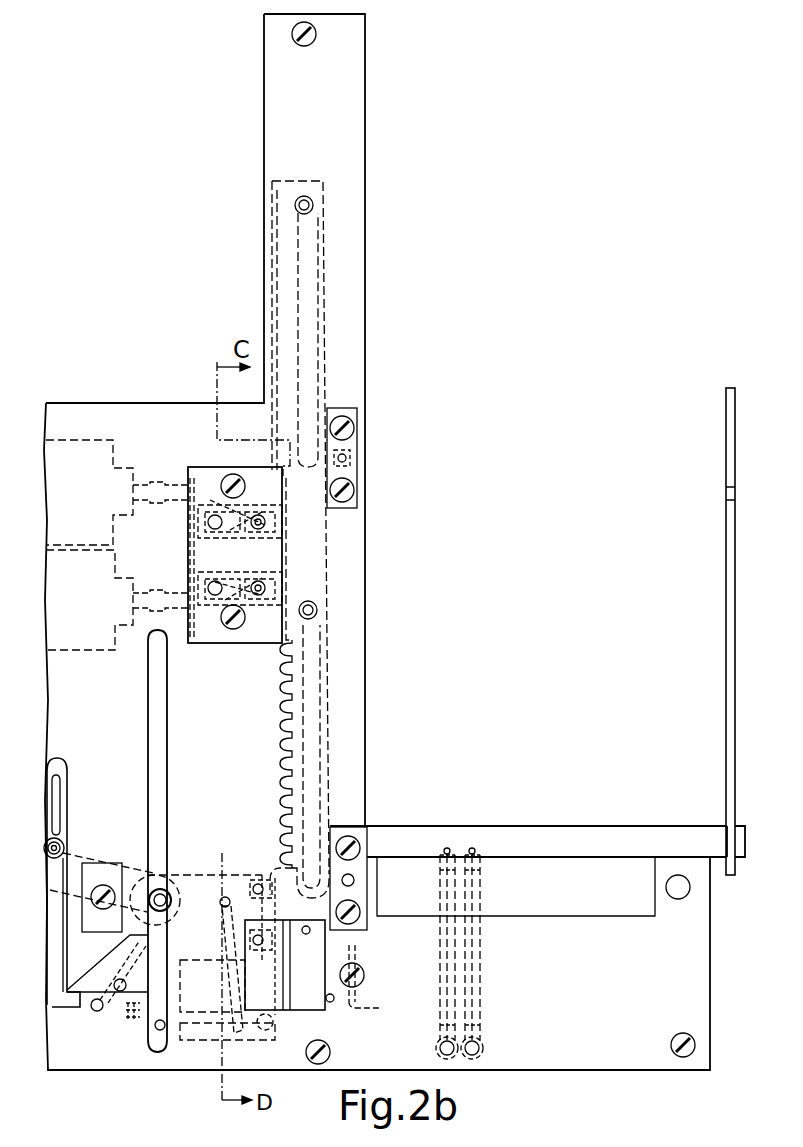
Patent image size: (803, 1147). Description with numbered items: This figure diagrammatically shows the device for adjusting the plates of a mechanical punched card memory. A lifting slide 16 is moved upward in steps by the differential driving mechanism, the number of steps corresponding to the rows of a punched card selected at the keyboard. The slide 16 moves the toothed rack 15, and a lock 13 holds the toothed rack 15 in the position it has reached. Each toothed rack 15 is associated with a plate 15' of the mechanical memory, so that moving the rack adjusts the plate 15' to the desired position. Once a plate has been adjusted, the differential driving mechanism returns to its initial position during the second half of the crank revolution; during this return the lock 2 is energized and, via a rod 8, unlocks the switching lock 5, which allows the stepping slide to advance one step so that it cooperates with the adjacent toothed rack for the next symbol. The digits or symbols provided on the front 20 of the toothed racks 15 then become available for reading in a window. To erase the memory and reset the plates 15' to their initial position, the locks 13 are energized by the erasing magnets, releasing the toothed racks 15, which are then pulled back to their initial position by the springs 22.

The lock 2 is at (88, 985).
The switching lock 5 is at (276, 1021).
The rod 8 is at (158, 1000).
The lock 13 is at (277, 492).
The toothed rack 15 is at (343, 688).
The plate 15' is at (704, 631).
The slide 16 is at (200, 898).
The front of the toothed racks 20 is at (276, 250).
The springs 22 is at (478, 983).